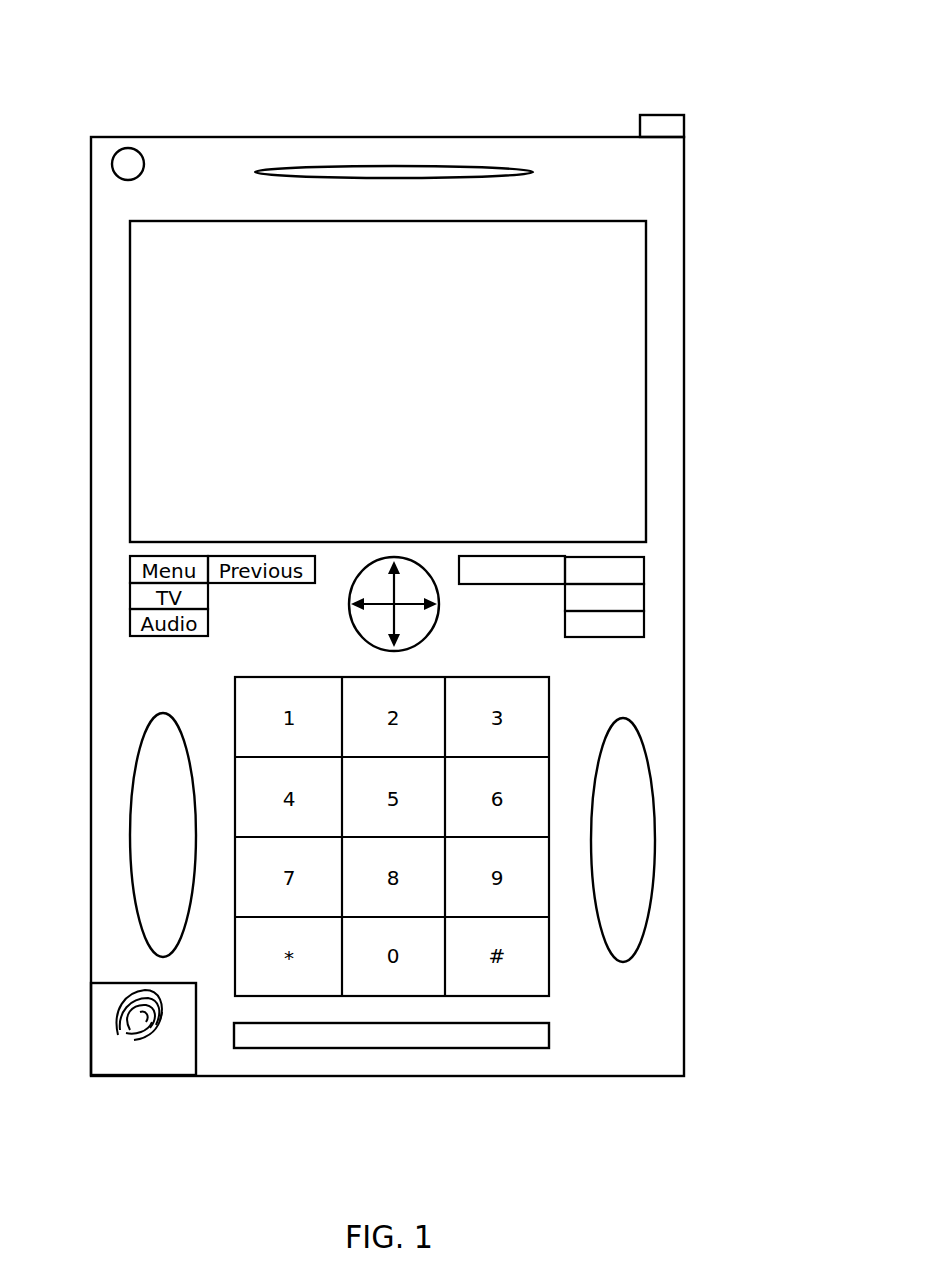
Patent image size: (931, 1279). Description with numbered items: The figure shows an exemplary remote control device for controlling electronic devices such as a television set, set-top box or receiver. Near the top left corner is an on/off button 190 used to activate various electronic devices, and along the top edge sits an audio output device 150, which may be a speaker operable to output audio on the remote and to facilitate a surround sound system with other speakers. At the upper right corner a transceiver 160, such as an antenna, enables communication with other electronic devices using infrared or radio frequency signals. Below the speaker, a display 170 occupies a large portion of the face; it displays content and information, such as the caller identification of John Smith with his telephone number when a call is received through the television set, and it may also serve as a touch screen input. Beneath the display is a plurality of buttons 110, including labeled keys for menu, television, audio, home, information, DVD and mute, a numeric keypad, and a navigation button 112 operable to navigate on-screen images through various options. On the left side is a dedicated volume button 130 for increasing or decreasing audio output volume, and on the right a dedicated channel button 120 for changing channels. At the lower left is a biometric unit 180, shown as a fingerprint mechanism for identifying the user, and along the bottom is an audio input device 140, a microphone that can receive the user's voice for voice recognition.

The plurality of buttons 110 is at (658, 598).
The navigation button 112 is at (349, 603).
The dedicated channel button 120 is at (655, 812).
The dedicated volume button 130 is at (130, 848).
The audio input device 140 is at (415, 1048).
The audio output device 150 is at (390, 166).
The transceiver 160 is at (674, 104).
The display 170 is at (646, 319).
The biometric unit 180 is at (91, 1033).
The on/off button 190 is at (112, 164).